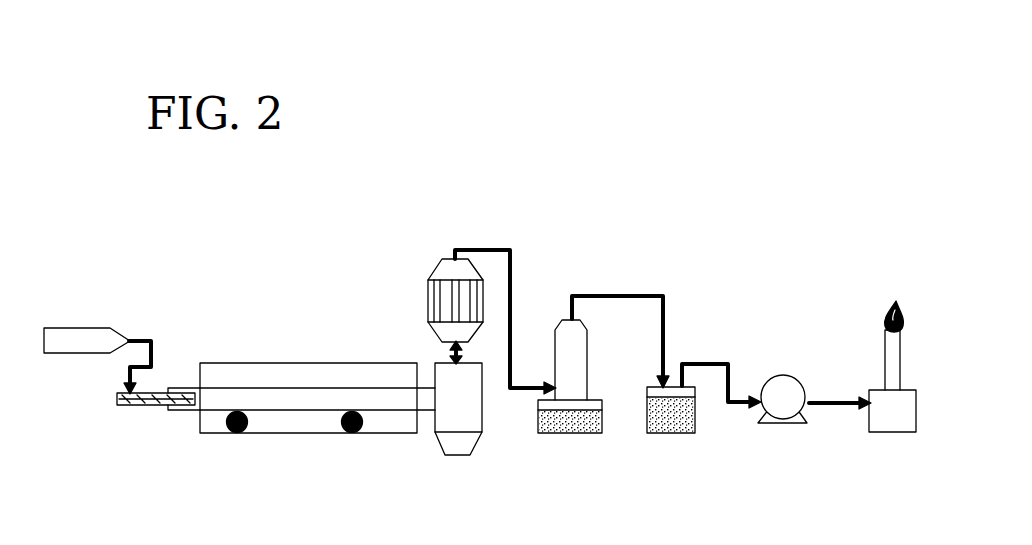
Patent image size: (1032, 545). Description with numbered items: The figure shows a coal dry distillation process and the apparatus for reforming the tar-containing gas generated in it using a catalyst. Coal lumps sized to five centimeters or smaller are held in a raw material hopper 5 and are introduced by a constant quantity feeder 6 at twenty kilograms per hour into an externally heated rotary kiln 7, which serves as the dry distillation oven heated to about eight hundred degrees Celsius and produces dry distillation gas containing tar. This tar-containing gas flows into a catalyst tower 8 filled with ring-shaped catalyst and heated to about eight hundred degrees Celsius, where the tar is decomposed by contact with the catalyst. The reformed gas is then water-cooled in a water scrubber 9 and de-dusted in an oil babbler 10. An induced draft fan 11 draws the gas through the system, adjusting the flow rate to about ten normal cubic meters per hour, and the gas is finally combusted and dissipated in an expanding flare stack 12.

The raw material hopper 5 is at (82, 338).
The constant quantity feeder 6 is at (142, 406).
The externally heated rotary kiln 7 is at (310, 373).
The catalyst tower 8 is at (430, 304).
The water scrubber 9 is at (567, 437).
The oil babbler 10 is at (667, 437).
The induced draft fan 11 is at (782, 428).
The expanding flare stack 12 is at (888, 433).